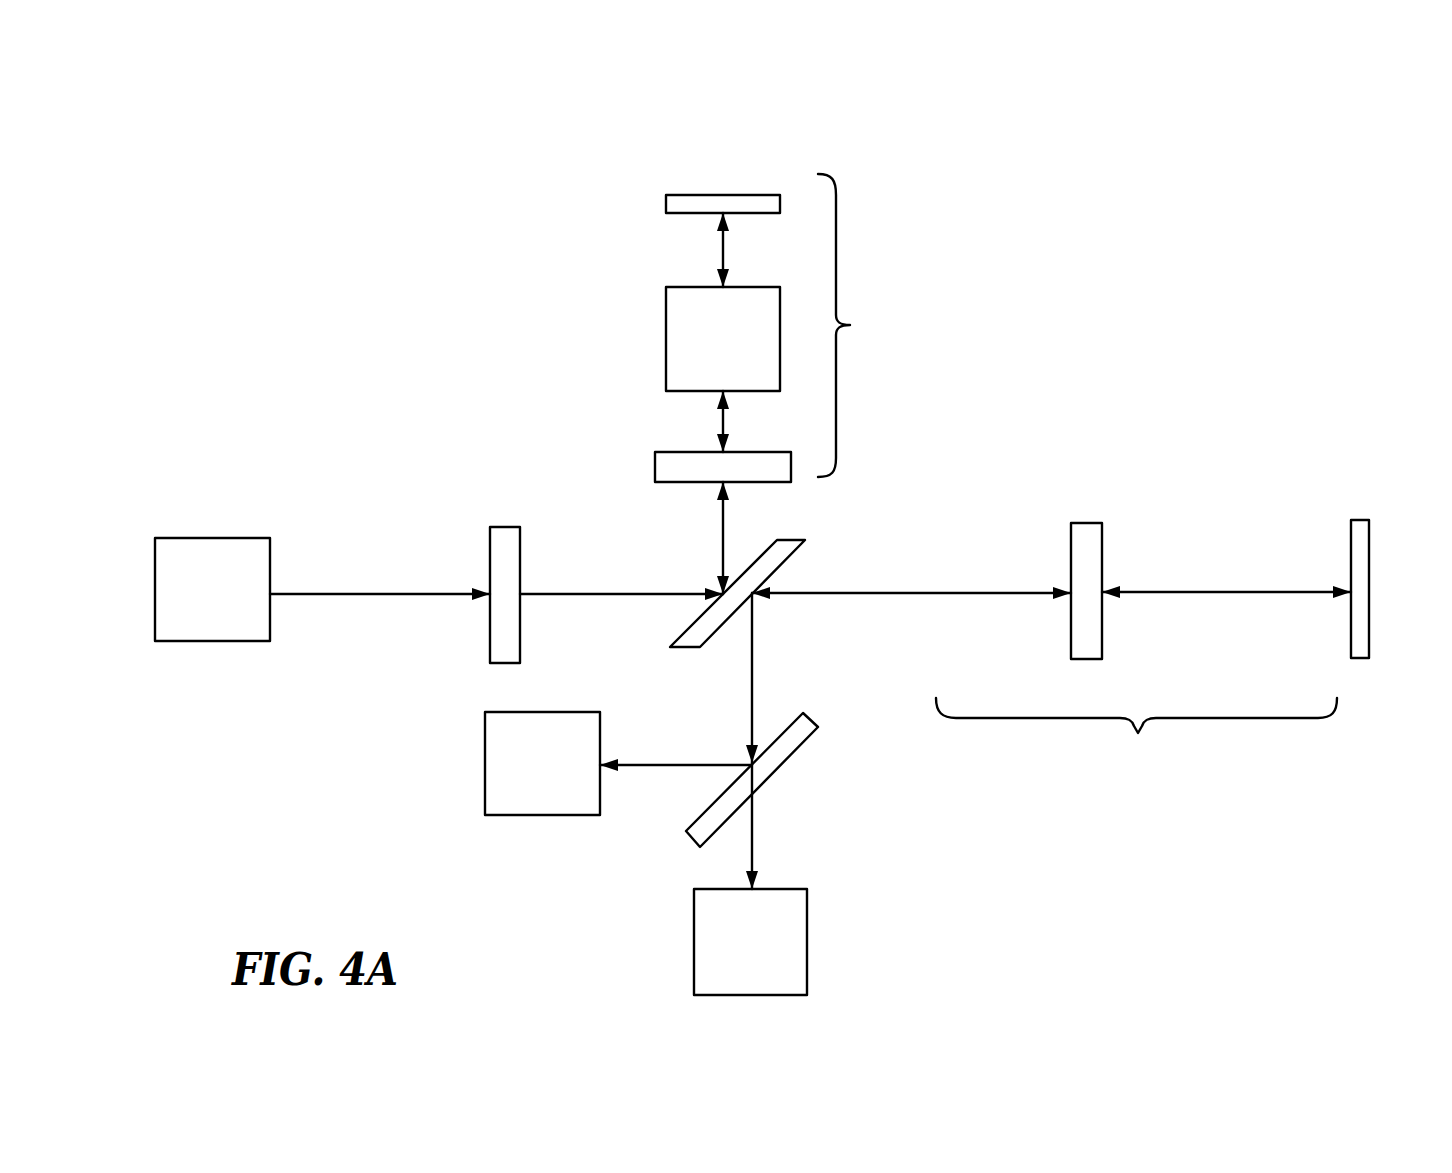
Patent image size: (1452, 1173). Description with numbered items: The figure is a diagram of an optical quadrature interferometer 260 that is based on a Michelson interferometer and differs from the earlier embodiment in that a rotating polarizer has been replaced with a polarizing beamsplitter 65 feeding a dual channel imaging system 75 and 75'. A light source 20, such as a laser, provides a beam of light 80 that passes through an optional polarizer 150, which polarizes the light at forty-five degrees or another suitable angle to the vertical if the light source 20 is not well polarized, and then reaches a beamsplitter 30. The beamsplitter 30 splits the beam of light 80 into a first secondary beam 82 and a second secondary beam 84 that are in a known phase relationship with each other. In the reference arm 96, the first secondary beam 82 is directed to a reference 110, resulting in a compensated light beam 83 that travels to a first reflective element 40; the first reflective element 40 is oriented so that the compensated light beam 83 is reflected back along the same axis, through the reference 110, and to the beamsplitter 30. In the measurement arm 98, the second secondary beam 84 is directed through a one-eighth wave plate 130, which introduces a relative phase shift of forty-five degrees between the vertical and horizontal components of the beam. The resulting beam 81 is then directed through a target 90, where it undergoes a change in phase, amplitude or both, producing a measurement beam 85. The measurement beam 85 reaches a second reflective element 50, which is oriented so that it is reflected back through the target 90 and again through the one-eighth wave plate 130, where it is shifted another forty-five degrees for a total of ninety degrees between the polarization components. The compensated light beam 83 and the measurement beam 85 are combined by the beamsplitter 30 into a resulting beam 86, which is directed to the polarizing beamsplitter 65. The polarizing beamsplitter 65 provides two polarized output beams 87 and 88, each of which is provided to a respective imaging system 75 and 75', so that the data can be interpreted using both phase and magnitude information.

The optical quadrature interferometer 260 is at (462, 340).
The second reflective element 50 is at (675, 195).
The measurement beam 85 is at (723, 248).
The target 90 is at (723, 339).
The beam 81 is at (723, 424).
The one-eighth wave plate 130 is at (660, 470).
The measurement arm 98 is at (924, 325).
The light source 20 is at (212, 589).
The beam of light 80 is at (340, 594).
The polarizer 150 is at (495, 628).
The beamsplitter 30 is at (787, 552).
The second secondary beam 84 is at (723, 550).
The first secondary beam 82 is at (921, 594).
The reference 110 is at (1083, 540).
The compensated light beam 83 is at (1257, 593).
The first reflective element 40 is at (1358, 520).
The reference arm 96 is at (1136, 766).
The resulting beam 86 is at (753, 678).
The polarizing beamsplitter 65 is at (787, 767).
The polarized output beam 88 is at (660, 765).
The imaging system 75' is at (542, 763).
The polarized output beam 87 is at (750, 848).
The imaging system 75 is at (750, 942).